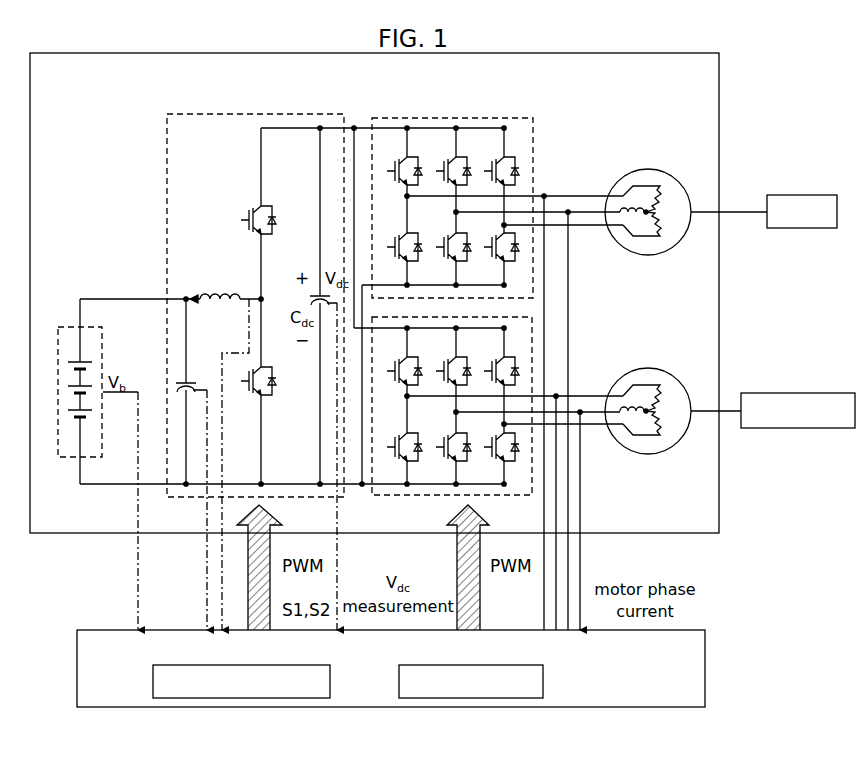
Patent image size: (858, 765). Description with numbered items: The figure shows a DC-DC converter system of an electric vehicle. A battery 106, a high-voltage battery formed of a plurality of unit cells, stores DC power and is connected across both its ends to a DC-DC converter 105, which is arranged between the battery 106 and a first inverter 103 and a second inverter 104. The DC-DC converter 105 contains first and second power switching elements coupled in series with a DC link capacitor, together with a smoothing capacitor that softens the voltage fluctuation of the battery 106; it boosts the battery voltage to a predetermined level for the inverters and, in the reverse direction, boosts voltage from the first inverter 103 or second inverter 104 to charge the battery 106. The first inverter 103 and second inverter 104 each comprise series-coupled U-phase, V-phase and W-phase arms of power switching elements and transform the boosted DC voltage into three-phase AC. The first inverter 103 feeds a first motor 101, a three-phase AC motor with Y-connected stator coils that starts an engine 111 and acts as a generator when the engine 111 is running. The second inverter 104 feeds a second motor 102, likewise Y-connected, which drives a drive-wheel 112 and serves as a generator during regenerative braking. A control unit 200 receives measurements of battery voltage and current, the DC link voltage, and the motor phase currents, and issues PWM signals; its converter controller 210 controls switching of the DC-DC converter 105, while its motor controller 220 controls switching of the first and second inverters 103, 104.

The first motor 101 is at (648, 169).
The second motor 102 is at (648, 455).
The first inverter 103 is at (447, 118).
The second inverter 104 is at (398, 497).
The DC-DC converter 105 is at (242, 114).
The battery 106 is at (61, 327).
The engine 111 is at (801, 195).
The drive-wheel 112 is at (798, 393).
The control unit 200 is at (424, 668).
The converter controller 210 is at (153, 682).
The motor controller 220 is at (545, 683).